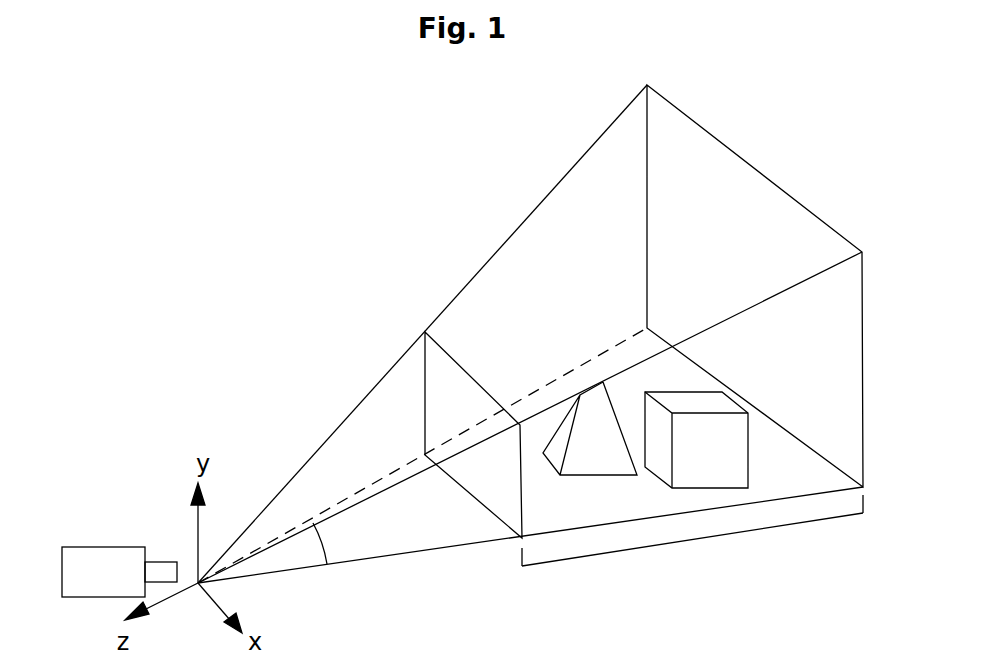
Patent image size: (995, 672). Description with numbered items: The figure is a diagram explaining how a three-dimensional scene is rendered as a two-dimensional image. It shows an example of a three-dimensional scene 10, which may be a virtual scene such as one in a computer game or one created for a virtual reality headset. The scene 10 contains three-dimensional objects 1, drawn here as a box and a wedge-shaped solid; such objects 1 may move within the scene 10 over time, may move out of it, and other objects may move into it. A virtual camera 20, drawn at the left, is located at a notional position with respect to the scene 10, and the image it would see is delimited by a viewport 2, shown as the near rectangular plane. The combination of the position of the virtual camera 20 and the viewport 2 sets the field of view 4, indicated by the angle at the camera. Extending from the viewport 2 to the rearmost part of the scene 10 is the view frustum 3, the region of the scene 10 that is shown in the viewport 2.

The 3D objects 1 is at (702, 402).
The viewport 2 is at (452, 412).
The view frustum 3 is at (695, 540).
The field of view 4 is at (322, 540).
The 3D scene 10 is at (320, 240).
The virtual camera 20 is at (75, 547).